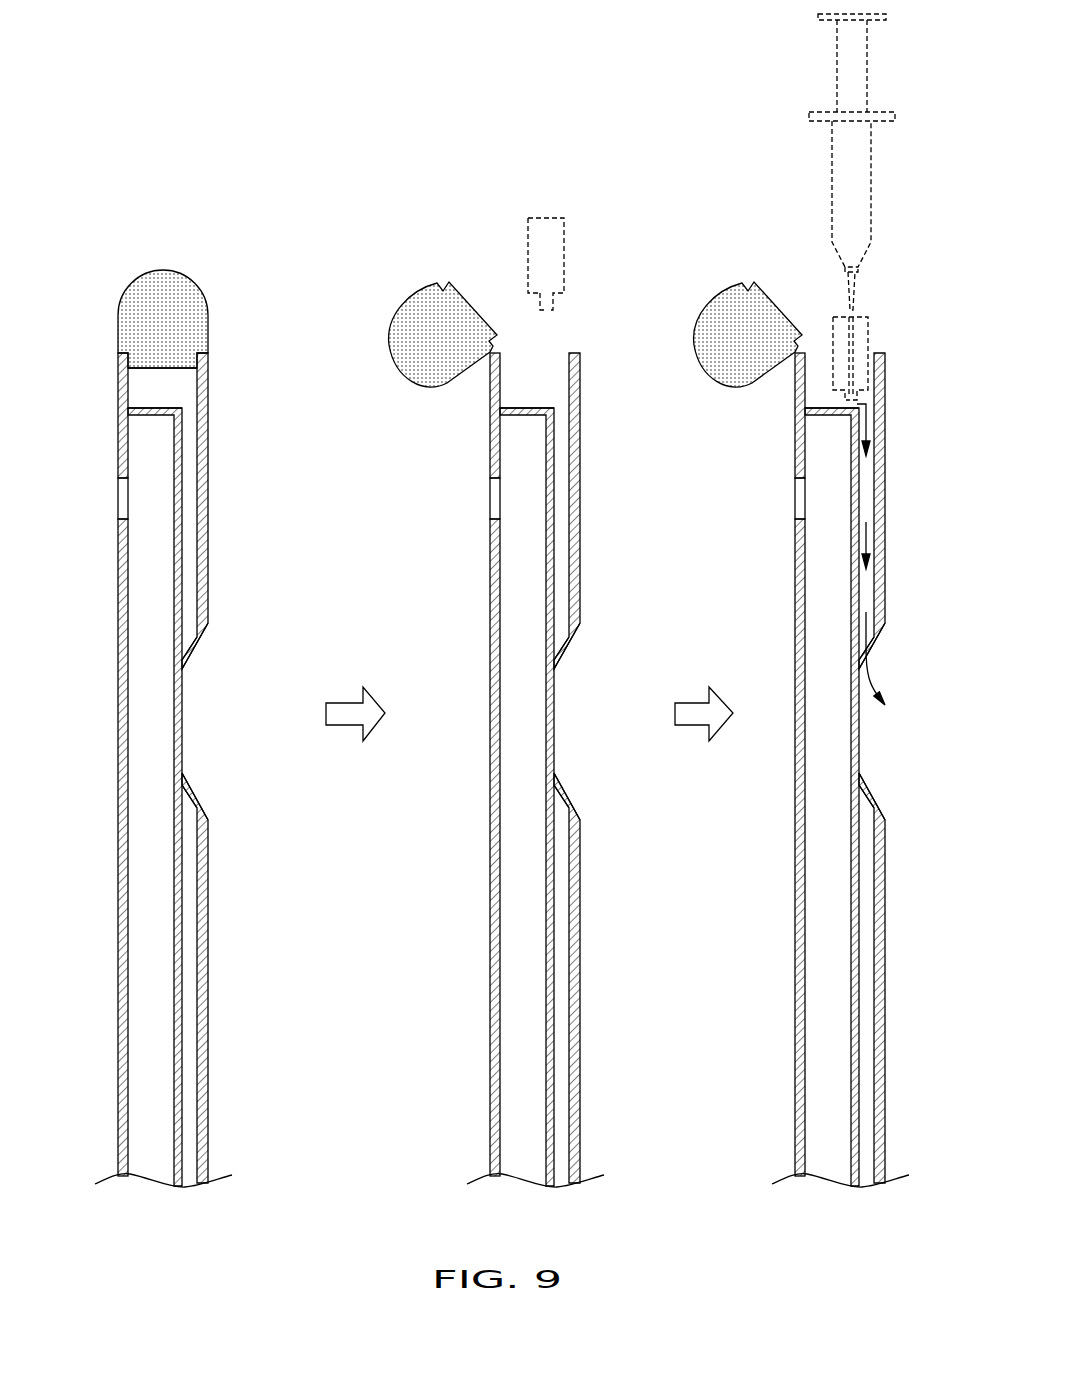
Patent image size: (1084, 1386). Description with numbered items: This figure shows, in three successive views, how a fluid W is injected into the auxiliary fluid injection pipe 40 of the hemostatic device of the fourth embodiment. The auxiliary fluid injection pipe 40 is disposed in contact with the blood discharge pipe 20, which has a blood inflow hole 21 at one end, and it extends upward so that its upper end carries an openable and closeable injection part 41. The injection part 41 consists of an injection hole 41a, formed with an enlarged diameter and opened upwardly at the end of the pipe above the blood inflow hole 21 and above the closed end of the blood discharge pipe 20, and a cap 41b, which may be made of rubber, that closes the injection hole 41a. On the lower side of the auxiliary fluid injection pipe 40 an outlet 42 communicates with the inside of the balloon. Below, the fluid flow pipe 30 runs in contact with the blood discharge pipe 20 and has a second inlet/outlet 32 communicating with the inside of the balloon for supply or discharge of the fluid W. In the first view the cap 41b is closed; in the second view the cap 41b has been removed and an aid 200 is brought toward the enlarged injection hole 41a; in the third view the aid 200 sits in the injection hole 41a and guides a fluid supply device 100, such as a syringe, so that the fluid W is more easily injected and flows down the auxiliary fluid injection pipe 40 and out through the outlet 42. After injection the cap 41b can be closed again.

The blood discharge pipe 20 is at (125, 832).
The blood inflow hole 21 is at (123, 503).
The fluid flow pipe 30 is at (205, 855).
The second inlet/outlet 32 is at (190, 790).
The auxiliary fluid injection pipe 40 is at (204, 575).
The injection part 41 is at (488, 358).
The injection hole 41a is at (185, 387).
The cap 41b is at (186, 327).
The outlet 42 is at (191, 655).
The fluid supply device 100 is at (833, 195).
The aid 200 is at (528, 249).
The fluid W is at (878, 532).